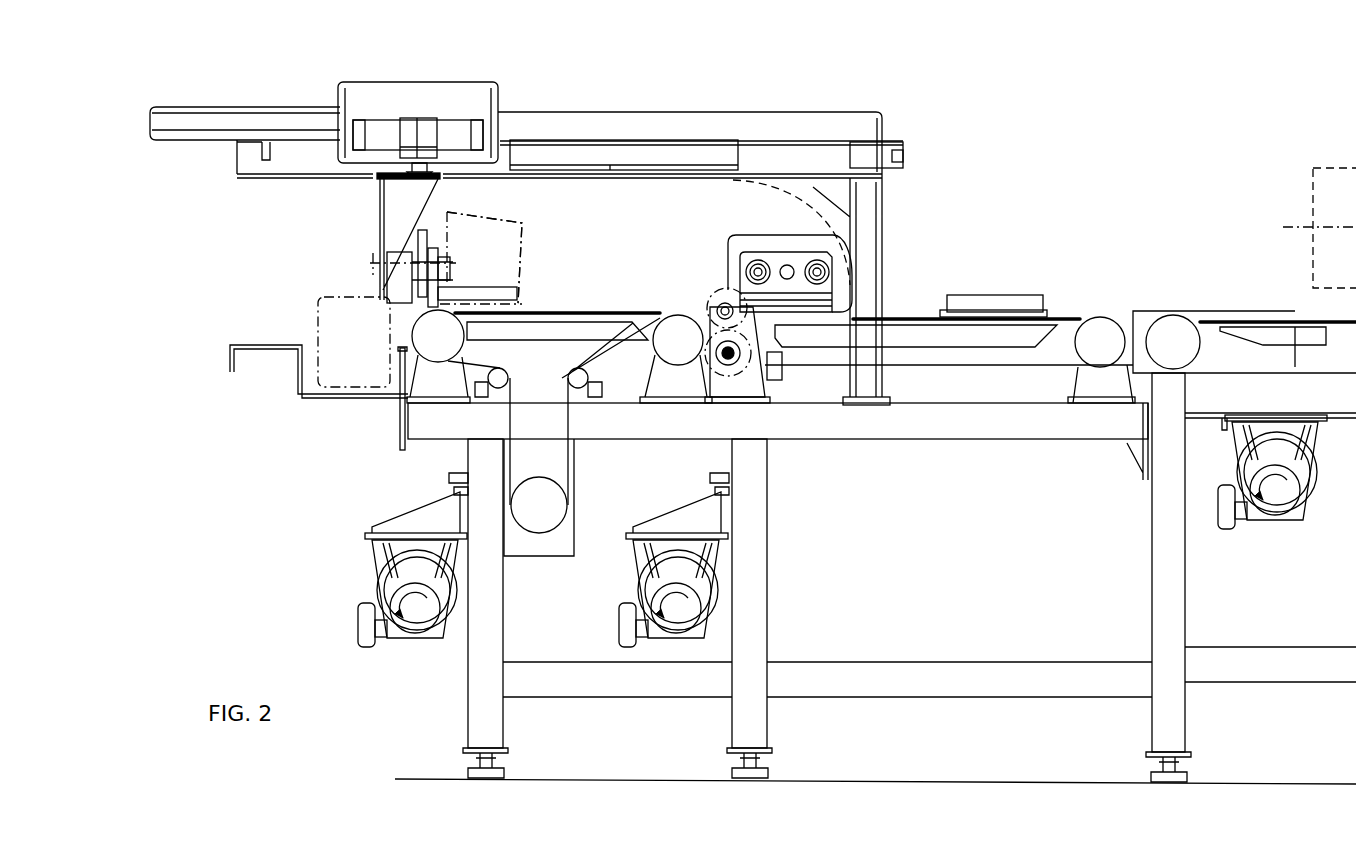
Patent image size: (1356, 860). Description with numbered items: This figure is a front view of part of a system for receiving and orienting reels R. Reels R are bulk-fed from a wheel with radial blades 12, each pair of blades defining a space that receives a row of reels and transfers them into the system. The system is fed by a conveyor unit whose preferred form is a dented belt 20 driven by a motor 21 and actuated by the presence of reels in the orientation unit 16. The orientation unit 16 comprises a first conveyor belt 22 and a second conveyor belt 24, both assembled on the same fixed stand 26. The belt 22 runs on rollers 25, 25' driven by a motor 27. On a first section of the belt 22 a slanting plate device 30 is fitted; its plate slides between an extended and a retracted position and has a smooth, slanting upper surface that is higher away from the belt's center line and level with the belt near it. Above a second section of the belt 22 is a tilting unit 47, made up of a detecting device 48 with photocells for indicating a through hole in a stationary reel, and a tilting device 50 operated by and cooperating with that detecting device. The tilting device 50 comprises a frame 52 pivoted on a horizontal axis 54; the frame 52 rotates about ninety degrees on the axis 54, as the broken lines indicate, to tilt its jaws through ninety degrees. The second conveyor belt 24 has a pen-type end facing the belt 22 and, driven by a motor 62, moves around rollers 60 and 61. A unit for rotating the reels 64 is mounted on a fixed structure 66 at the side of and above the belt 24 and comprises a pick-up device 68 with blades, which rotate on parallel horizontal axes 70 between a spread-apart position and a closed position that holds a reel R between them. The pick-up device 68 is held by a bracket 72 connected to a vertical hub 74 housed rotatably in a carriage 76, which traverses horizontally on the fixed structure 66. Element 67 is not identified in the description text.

The wheel with radial blades 12 is at (1332, 186).
The orientation unit 16 is at (975, 203).
The dented belt 20 is at (1190, 317).
The motor 21 is at (1282, 500).
The first conveyor belt 22 is at (1072, 314).
The second conveyor belt 24 is at (612, 314).
The roller 25 is at (662, 359).
The roller 25' is at (1113, 315).
The fixed stand 26 is at (775, 562).
The motor 27 is at (673, 572).
The slanting plate device 30 is at (999, 290).
The tilting unit 47 is at (737, 222).
The detecting device 48 is at (810, 125).
The tilting device 50 is at (728, 263).
The frame 52 is at (823, 292).
The horizontal axis 54 is at (722, 303).
The roller 60 is at (427, 350).
The roller 61 is at (543, 497).
The motor 62 is at (408, 563).
The unit for rotating the reels 64 is at (350, 266).
The fixed structure 66 is at (308, 160).
The roll 67 is at (530, 217).
The pick-up device 68 is at (529, 286).
The parallel horizontal axes 70 is at (377, 252).
The bracket 72 is at (415, 216).
The vertical hub 74 is at (417, 170).
The carriage 76 is at (444, 97).
The reel R is at (493, 253).